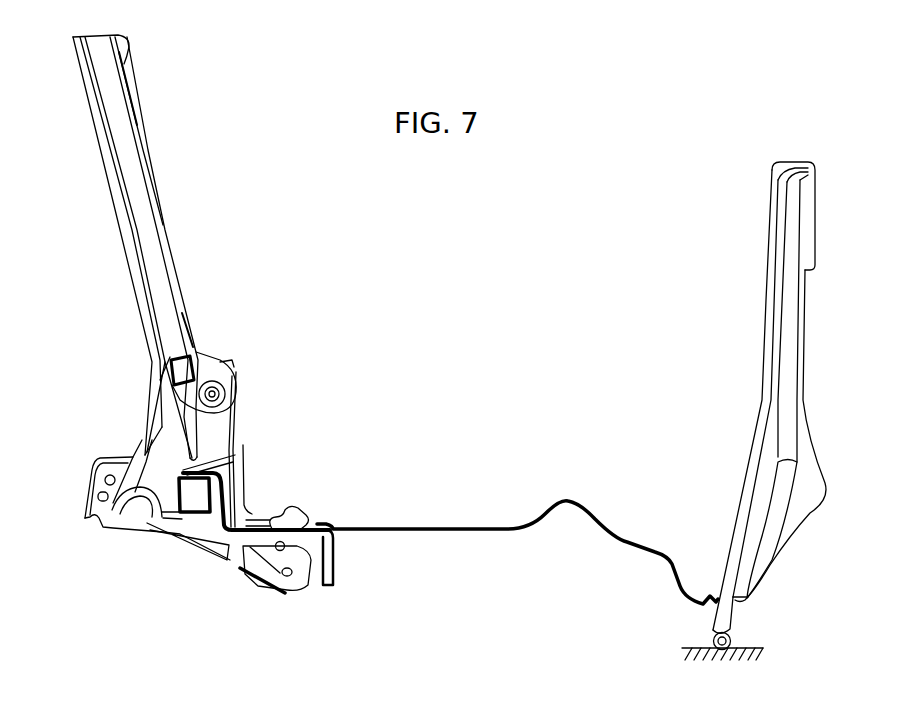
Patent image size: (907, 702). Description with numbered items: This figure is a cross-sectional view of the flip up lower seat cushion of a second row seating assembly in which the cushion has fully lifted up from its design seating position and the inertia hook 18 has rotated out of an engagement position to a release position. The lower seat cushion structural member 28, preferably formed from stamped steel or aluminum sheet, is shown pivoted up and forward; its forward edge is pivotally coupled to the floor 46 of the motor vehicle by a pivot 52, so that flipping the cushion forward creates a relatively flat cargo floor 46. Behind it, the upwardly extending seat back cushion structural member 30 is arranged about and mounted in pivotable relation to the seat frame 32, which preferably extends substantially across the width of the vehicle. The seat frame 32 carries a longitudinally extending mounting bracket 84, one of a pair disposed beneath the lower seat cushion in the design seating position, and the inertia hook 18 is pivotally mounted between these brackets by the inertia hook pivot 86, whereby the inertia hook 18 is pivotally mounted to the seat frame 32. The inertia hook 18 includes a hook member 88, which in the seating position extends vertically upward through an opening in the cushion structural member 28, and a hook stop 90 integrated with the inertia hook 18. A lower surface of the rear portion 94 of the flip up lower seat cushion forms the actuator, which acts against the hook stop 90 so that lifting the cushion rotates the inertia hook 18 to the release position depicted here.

The seat back cushion structural member 30 is at (128, 160).
The seat frame 32 is at (218, 425).
The mounting bracket 84 is at (227, 533).
The inertia hook 18 is at (297, 550).
The hook stop 90 is at (272, 523).
The inertia hook pivot 86 is at (287, 547).
The hook member 88 is at (307, 523).
The lower seat cushion structural member 28 is at (787, 333).
The rear portion 94 is at (810, 173).
The pivot 52 is at (732, 640).
The floor 46 is at (753, 648).